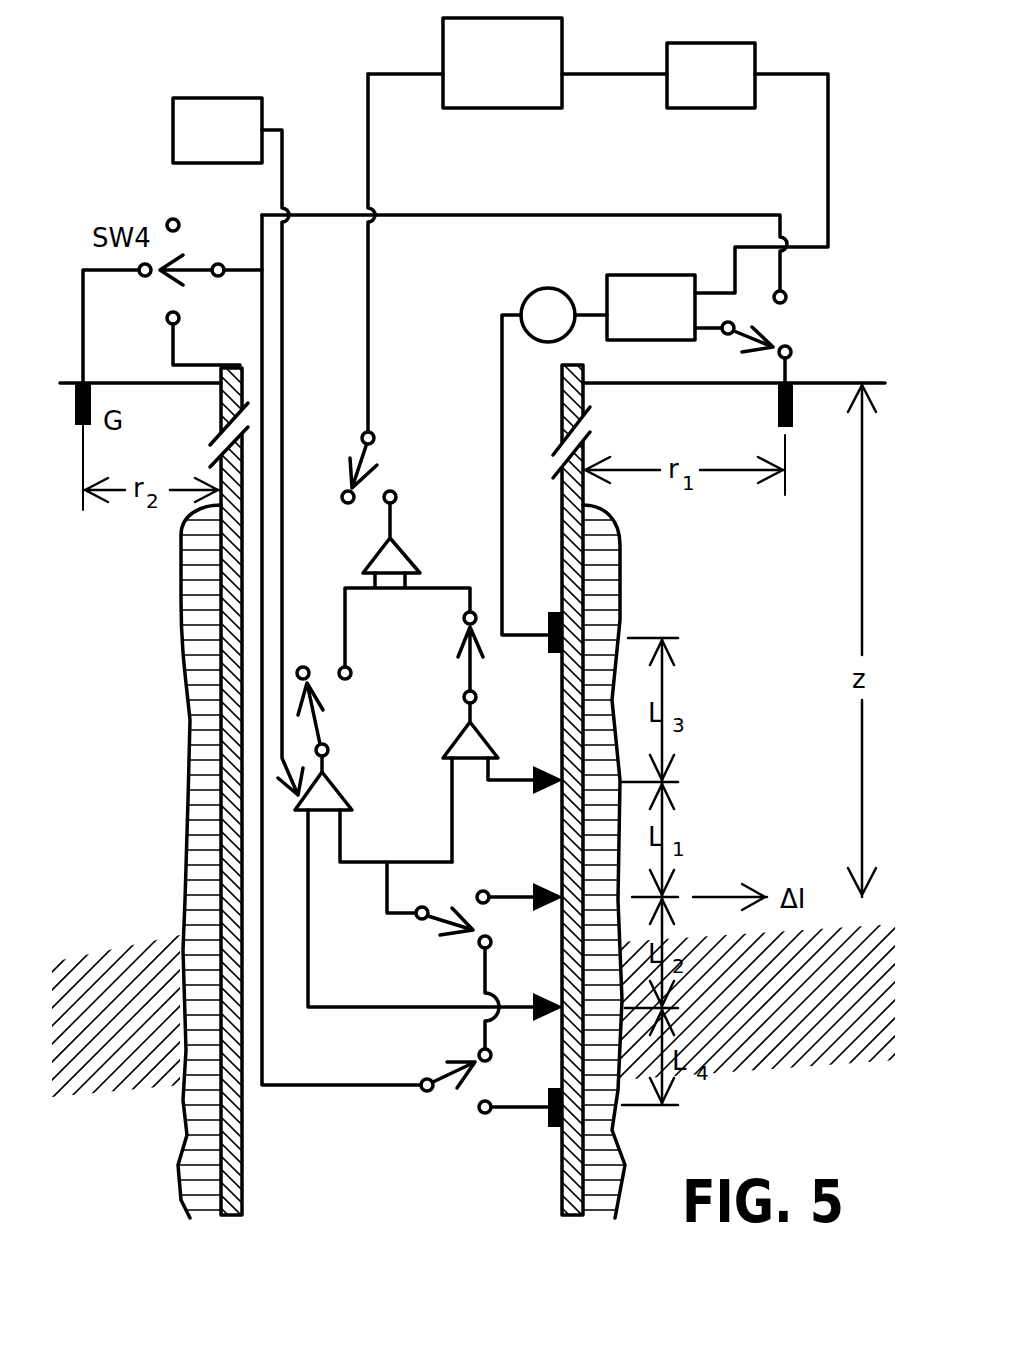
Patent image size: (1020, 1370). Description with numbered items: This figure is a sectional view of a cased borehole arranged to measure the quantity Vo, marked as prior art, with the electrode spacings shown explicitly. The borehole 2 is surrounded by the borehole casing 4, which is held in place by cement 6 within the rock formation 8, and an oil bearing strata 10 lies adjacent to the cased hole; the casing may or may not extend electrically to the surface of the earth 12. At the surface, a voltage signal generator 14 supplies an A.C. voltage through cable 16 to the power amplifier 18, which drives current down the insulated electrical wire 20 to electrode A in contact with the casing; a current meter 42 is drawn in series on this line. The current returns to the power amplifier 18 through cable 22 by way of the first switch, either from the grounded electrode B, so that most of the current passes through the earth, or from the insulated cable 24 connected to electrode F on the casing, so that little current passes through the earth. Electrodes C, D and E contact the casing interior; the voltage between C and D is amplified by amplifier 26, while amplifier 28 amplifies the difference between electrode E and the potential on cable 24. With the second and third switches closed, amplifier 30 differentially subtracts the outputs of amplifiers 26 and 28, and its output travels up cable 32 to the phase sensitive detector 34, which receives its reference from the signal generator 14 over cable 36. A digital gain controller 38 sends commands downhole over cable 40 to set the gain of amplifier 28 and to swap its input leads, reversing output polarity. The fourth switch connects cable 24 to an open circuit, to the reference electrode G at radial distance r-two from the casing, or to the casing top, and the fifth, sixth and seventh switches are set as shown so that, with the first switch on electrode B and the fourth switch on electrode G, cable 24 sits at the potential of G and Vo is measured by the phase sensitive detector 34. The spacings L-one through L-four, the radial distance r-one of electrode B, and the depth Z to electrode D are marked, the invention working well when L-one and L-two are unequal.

The borehole 2 is at (352, 1118).
The borehole casing 4 is at (572, 1150).
The cement 6 is at (600, 1172).
The rock formation 8 is at (762, 1090).
The oil bearing strata 10 is at (842, 1028).
The surface of the earth 12 is at (613, 385).
The voltage signal generator 14 is at (728, 43).
The cable 16 is at (828, 190).
The power amplifier 18 is at (607, 297).
The insulated electrical wire 20 is at (502, 388).
The cable 22 is at (710, 332).
The insulated cable 24 is at (520, 215).
The amplifier 26 is at (457, 740).
The amplifier 28 is at (335, 788).
The amplifier 30 is at (412, 557).
The cable 32 is at (368, 335).
The phase sensitive detector 34 is at (443, 45).
The cable 36 is at (583, 72).
The digital gain controller 38 is at (262, 118).
The cable 40 is at (282, 302).
The current meter 42 is at (522, 307).